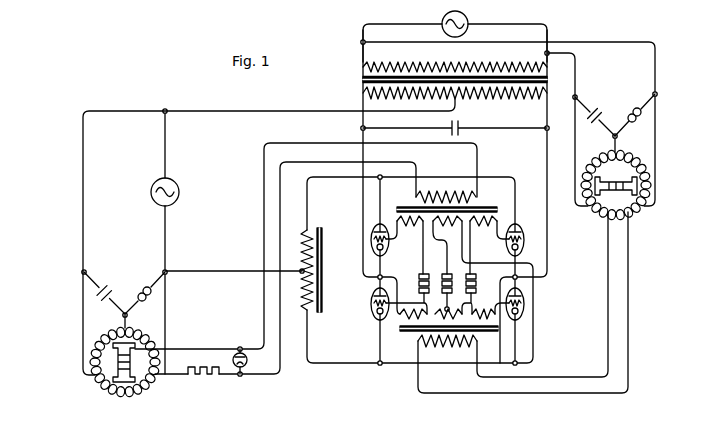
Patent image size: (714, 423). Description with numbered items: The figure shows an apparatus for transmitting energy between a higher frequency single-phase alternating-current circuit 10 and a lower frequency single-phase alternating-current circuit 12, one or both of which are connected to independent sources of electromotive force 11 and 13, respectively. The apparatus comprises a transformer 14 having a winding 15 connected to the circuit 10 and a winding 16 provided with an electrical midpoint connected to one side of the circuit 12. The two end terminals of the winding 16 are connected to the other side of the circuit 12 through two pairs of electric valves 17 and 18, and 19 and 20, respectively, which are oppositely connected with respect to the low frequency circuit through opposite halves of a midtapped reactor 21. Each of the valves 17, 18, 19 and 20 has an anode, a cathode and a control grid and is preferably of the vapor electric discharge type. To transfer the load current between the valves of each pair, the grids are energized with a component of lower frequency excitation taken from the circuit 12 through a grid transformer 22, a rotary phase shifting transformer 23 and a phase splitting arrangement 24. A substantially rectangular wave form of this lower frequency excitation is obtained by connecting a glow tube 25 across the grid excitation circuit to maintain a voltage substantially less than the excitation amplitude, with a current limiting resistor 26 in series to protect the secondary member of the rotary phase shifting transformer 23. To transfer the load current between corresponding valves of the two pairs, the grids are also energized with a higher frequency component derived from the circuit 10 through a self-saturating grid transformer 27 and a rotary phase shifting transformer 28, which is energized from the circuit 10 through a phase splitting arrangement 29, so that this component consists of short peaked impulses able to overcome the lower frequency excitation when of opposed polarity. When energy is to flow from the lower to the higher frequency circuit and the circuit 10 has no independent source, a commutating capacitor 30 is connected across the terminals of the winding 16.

The higher frequency alternating-current circuit 10 is at (363, 30).
The source of electromotive force 11 is at (445, 18).
The lower frequency alternating-current circuit 12 is at (203, 111).
The source of electromotive force 13 is at (179, 192).
The transformer 14 is at (363, 80).
The winding 15 is at (368, 63).
The winding 16 is at (363, 103).
The electric valve 17 is at (373, 232).
The electric valve 18 is at (377, 311).
The electric valve 19 is at (522, 226).
The electric valve 20 is at (525, 297).
The midtapped reactor 21 is at (323, 270).
The grid transformer 22 is at (480, 207).
The rotary phase shifting transformer 23 is at (138, 392).
The phase splitting arrangement 24 is at (142, 287).
The glow tube 25 is at (247, 365).
The current limiting resistor 26 is at (208, 377).
The grid transformer 27 is at (412, 331).
The rotary phase shifting transformer 28 is at (641, 212).
The phase splitting arrangement 29 is at (600, 112).
The commutating capacitor 30 is at (462, 127).